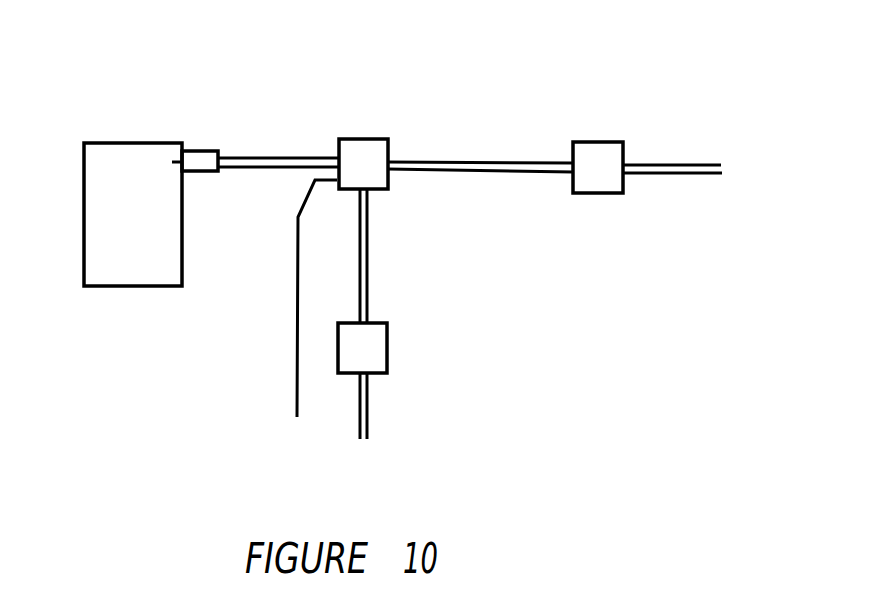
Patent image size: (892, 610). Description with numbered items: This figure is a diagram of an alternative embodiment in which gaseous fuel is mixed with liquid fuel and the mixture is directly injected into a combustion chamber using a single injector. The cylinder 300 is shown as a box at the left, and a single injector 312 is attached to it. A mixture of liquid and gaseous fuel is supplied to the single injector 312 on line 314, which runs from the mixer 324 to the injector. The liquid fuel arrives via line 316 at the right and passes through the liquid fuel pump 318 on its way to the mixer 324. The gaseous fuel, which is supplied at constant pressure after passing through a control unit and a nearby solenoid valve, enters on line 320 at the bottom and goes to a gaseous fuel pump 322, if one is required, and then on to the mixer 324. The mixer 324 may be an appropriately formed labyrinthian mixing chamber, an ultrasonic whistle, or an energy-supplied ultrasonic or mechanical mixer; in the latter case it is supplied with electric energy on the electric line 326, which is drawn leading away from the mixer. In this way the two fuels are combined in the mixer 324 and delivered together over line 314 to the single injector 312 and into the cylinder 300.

The cylinder 300 is at (125, 287).
The single injector 312 is at (193, 150).
The line 314 is at (278, 157).
The line 316 is at (683, 163).
The liquid fuel pump 318 is at (598, 142).
The line 320 is at (367, 427).
The gaseous fuel pump 322 is at (388, 345).
The mixer 324 is at (365, 138).
The electric line 326 is at (297, 287).